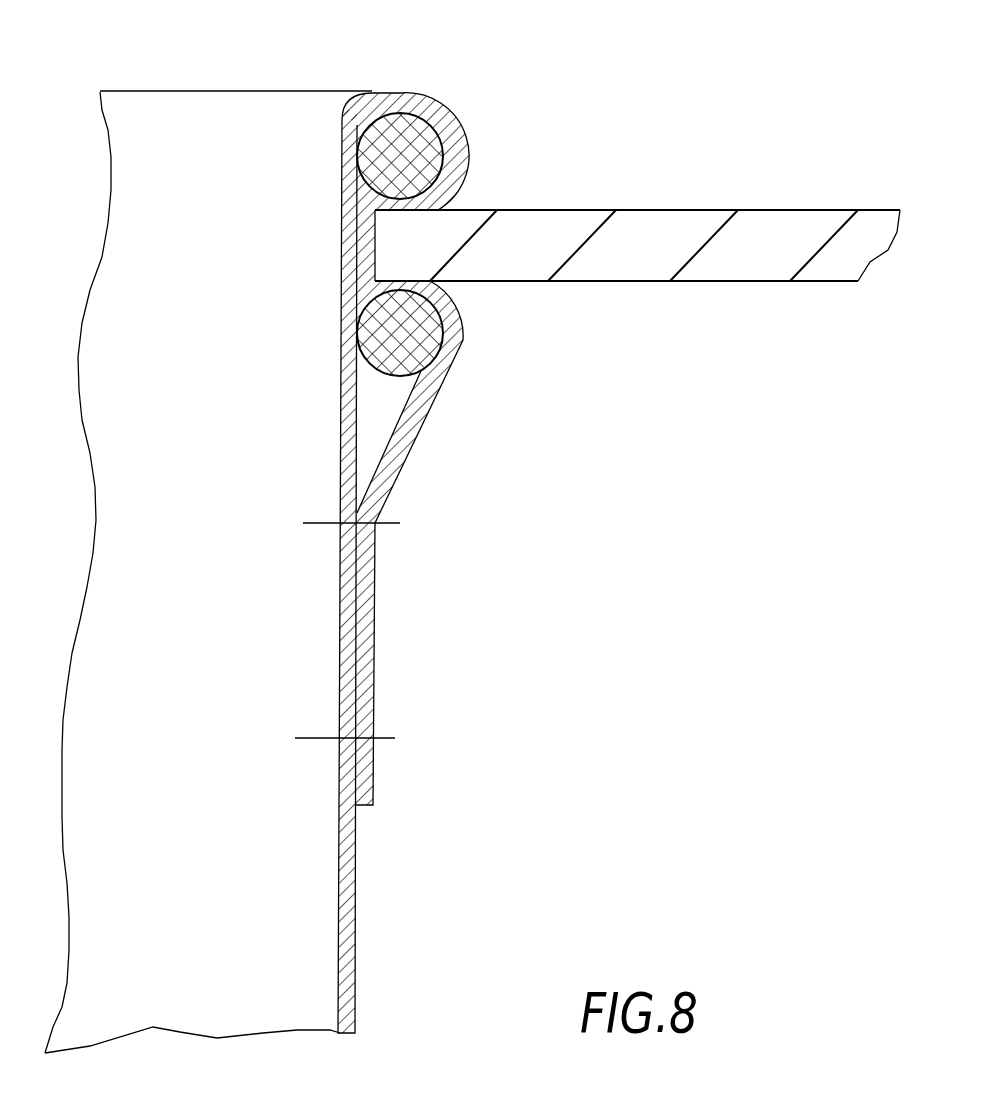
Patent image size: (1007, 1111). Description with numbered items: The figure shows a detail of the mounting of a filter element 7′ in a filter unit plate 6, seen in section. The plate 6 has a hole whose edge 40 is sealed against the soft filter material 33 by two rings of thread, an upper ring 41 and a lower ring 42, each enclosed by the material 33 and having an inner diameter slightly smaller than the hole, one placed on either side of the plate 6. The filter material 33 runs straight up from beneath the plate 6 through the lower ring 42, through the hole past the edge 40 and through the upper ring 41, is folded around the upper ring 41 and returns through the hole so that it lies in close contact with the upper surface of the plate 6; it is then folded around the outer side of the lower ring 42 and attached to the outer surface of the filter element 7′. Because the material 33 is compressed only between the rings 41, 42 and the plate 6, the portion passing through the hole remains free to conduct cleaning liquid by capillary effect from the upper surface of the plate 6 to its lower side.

The filter element 7′ is at (207, 92).
The upper ring of thread 41 is at (427, 144).
The lower ring of thread 42 is at (420, 338).
The edge of the hole in the plate 40 is at (376, 248).
The plate 6 is at (752, 266).
The filter material 33 is at (345, 932).